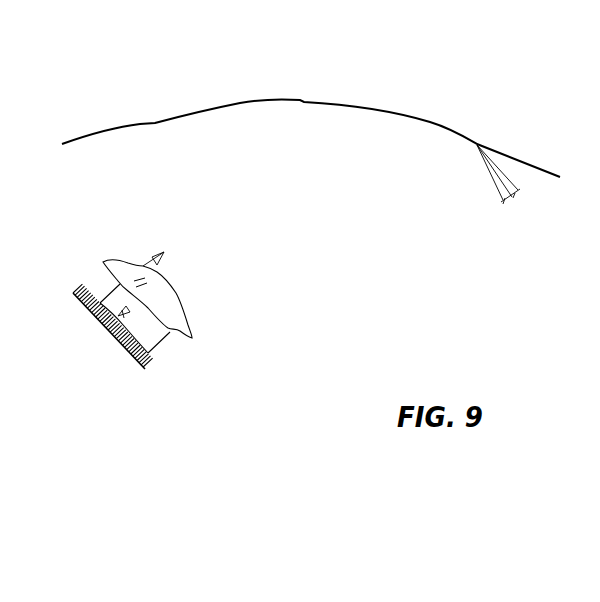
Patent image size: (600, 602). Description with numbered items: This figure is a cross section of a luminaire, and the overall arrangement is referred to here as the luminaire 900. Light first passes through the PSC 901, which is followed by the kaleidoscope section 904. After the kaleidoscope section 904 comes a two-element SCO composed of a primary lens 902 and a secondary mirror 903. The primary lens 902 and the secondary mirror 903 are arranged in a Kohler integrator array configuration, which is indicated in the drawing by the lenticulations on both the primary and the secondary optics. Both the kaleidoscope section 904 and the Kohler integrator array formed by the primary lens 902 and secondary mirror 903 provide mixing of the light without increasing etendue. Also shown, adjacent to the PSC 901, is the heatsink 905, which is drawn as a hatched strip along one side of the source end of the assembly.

The bioinformatics sensing environment 900 is at (464, 309).
The PSC 901 is at (91, 297).
The primary lens 902 is at (163, 299).
The secondary mirror 903 is at (303, 93).
The kaleidoscope section 904 is at (162, 338).
The heatsink 905 is at (157, 382).